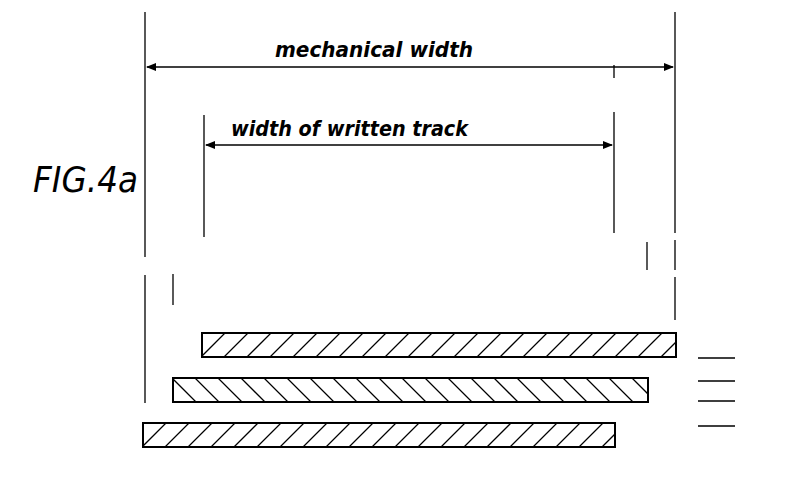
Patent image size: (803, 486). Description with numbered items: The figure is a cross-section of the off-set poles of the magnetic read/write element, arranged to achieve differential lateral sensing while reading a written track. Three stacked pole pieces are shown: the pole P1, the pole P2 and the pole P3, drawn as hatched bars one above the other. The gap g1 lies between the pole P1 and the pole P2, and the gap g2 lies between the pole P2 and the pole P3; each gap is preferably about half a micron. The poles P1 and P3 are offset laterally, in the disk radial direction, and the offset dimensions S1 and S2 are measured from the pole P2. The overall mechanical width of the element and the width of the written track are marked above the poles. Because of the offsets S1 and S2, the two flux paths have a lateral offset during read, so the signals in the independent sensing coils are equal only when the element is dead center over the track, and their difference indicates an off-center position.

The pole P1 is at (85, 317).
The pole P2 is at (85, 364).
The pole P3 is at (85, 409).
The offset dimension S1 is at (197, 288).
The offset dimension S2 is at (697, 255).
The gap g1 is at (715, 340).
The gap g2 is at (715, 386).